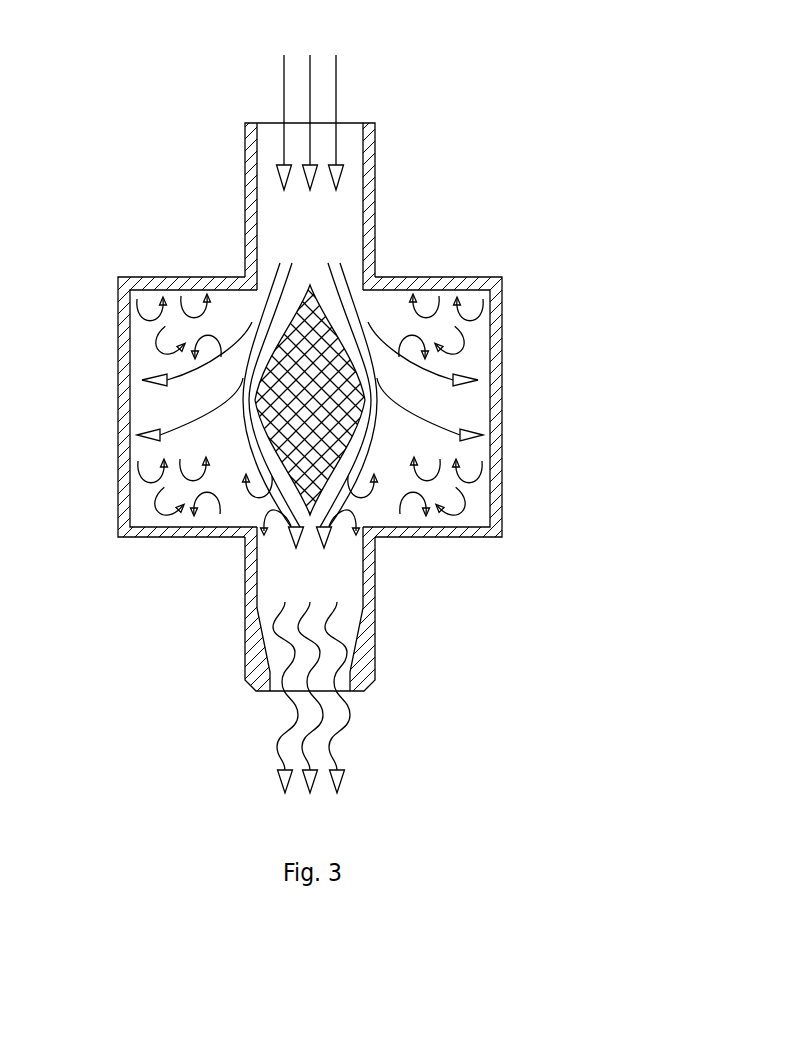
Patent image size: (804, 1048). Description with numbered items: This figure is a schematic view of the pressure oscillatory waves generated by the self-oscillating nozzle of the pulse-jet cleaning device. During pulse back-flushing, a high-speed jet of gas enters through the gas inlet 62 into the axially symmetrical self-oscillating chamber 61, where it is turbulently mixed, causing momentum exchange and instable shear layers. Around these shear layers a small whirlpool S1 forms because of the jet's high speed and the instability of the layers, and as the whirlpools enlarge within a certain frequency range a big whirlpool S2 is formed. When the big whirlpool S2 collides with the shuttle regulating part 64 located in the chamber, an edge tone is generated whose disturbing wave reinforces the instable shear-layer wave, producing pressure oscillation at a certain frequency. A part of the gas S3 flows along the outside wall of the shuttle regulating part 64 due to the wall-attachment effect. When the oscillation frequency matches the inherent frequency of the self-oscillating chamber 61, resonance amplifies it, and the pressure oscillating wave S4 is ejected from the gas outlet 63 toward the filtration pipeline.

The self-oscillating chamber 61 is at (123, 380).
The gas inlet 62 is at (365, 228).
The gas outlet 63 is at (257, 653).
The shuttle regulating part 64 is at (325, 423).
The small whirlpool S1 is at (450, 348).
The big whirlpool S2 is at (437, 490).
The gas flowing along the shuttle regulating part S3 is at (256, 452).
The pressure oscillating wave S4 is at (352, 730).